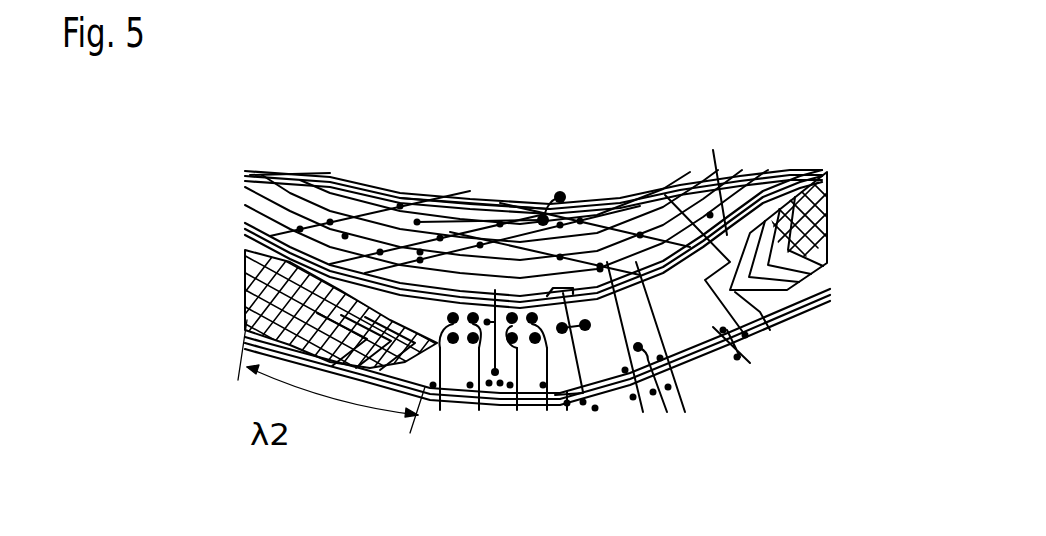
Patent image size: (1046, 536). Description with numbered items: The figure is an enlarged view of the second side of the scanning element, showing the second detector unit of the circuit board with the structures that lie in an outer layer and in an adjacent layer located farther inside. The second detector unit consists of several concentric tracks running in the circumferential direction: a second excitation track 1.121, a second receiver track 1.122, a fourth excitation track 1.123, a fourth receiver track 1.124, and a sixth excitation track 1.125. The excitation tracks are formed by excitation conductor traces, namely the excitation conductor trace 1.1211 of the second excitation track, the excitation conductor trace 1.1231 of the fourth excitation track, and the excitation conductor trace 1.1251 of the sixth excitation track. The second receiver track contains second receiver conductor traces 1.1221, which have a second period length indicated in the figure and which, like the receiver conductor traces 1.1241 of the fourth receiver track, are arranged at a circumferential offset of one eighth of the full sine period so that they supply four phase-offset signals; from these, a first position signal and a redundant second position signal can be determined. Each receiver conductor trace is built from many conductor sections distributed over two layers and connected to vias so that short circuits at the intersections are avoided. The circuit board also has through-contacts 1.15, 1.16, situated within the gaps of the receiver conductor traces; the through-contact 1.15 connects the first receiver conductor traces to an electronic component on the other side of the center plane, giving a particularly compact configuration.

The second excitation track 1.121 is at (245, 332).
The second receiver track 1.122 is at (245, 275).
The fourth excitation track 1.123 is at (245, 226).
The fourth receiver track 1.124 is at (245, 173).
The sixth excitation track 1.125 is at (472, 204).
The excitation conductor trace 1.1211 is at (822, 292).
The second receiver conductor trace 1.1221 is at (423, 335).
The excitation conductor trace 1.1231 is at (803, 171).
The receiver conductor trace 1.1241 is at (560, 195).
The excitation conductor trace 1.1251 is at (330, 172).
The through-contact 1.15 is at (555, 398).
The through-contact 1.16 is at (547, 400).